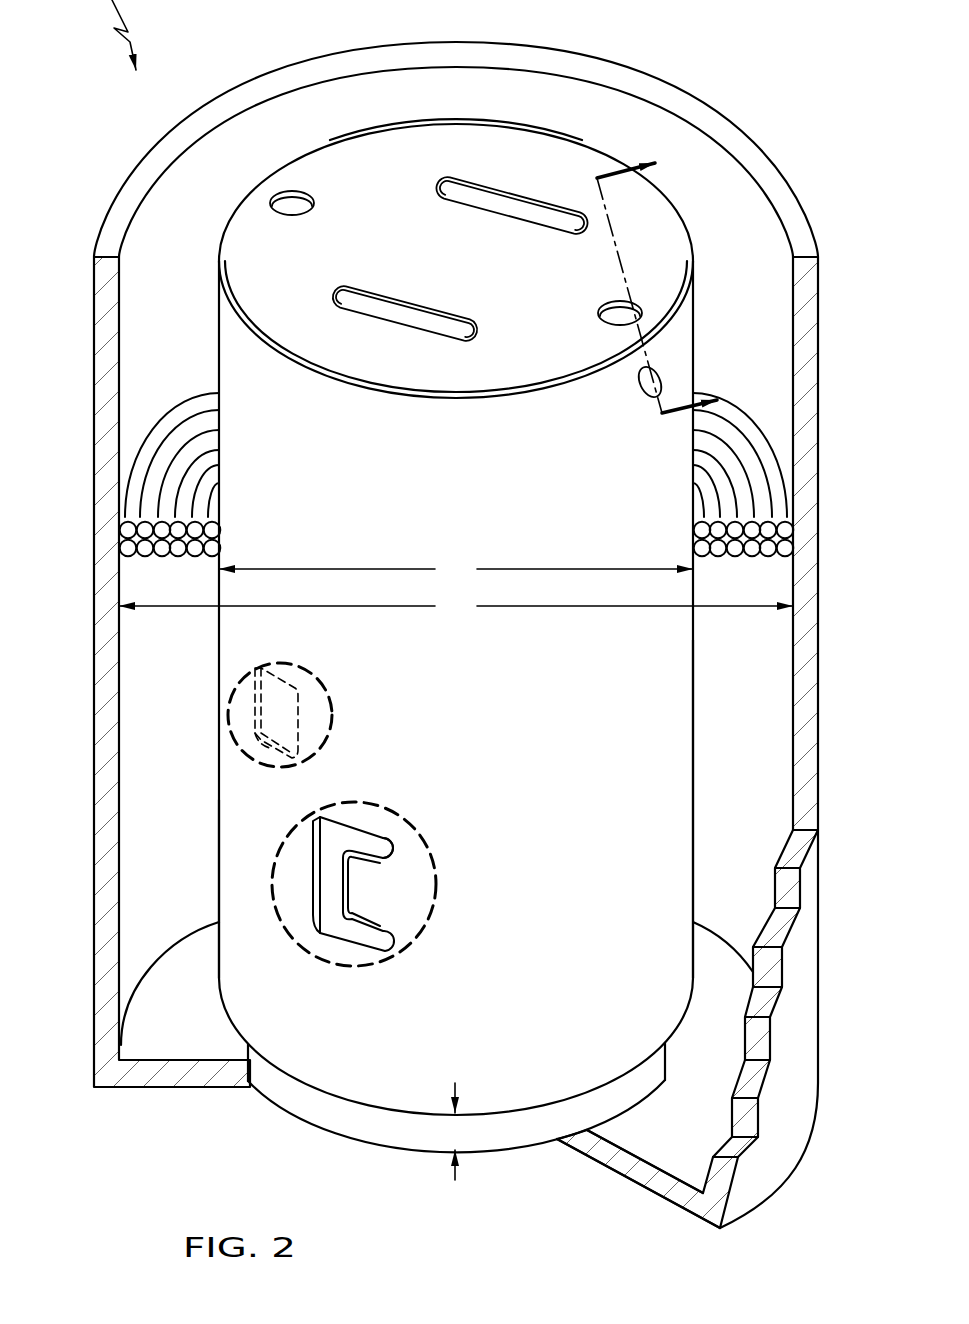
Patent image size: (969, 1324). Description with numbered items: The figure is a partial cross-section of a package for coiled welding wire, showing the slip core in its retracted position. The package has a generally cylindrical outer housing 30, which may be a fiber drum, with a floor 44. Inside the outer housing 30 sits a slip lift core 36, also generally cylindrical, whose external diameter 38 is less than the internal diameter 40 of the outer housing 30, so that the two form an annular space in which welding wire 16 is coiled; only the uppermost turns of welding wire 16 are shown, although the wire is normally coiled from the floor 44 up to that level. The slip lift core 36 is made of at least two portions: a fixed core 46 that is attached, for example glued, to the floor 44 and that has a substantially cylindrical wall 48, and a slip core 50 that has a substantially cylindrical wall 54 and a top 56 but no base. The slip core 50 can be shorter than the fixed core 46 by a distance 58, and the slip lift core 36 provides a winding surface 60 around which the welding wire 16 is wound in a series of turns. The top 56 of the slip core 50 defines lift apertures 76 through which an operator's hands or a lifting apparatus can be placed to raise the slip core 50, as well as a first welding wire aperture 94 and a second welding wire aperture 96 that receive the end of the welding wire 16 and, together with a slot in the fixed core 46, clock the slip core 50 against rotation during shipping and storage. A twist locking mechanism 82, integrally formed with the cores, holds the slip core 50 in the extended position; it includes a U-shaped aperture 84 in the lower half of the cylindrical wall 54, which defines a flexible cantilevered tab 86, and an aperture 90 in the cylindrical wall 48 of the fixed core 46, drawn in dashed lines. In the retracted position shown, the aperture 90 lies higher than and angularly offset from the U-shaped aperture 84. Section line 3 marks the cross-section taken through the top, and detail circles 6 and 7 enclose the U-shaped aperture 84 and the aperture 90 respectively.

The outer housing 30 is at (303, 70).
The slip lift core 36 is at (456, 79).
The lift apertures 76 is at (460, 214).
The first welding wire aperture 94 is at (456, 217).
The section line 3- 3 is at (672, 283).
The top 56 is at (415, 619).
The second welding wire aperture 96 is at (645, 398).
The welding wire 16 is at (152, 440).
The external diameter 38 is at (456, 569).
The internal diameter 40 is at (456, 606).
The detail circle 7 is at (229, 707).
The aperture 90 is at (305, 752).
The twist locking mechanism 82 is at (376, 804).
The detail circle 6 is at (365, 967).
The U-shaped aperture 84 is at (400, 848).
The tab 86 is at (407, 906).
The slip core 50 is at (219, 870).
The cylindrical wall 54 is at (712, 809).
The winding surface 60 is at (687, 1007).
The cylindrical wall 48 is at (248, 1052).
The fixed core 46 is at (312, 1128).
The distance 58 is at (455, 1131).
The floor 44 is at (637, 1172).